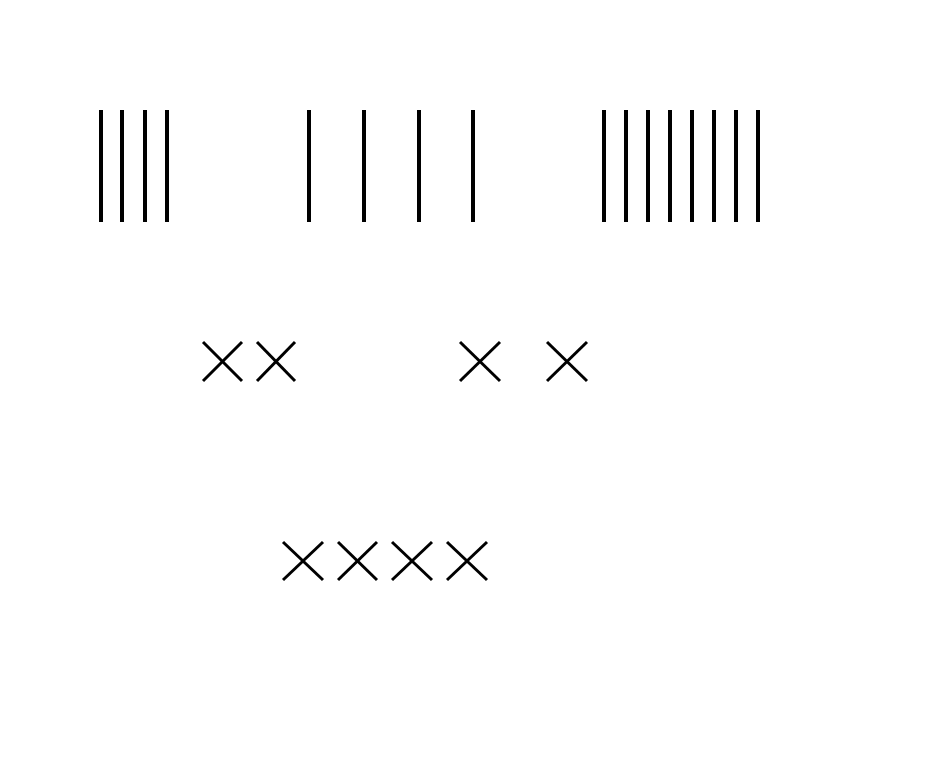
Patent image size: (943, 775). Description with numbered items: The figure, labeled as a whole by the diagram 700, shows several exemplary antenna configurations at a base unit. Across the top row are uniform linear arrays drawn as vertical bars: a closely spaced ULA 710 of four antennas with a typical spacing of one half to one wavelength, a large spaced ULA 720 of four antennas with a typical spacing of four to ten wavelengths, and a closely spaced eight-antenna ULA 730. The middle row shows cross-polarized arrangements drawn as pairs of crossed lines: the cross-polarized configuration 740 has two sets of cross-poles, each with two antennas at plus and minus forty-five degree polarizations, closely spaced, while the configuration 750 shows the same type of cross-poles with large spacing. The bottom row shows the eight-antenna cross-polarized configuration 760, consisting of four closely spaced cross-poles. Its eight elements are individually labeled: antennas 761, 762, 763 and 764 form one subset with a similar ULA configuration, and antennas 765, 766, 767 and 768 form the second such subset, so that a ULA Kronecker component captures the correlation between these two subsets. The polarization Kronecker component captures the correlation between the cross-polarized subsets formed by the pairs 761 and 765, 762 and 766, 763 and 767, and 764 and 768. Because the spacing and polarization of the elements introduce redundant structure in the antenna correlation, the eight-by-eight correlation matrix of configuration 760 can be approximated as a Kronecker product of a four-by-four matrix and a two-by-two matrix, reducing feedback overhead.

The antenna configurations diagram 700 is at (443, 406).
The closely spaced ULA 710 is at (142, 170).
The large spaced ULA 720 is at (383, 175).
The 8 antenna ULA closely spaced 730 is at (714, 181).
The cross-polarized configuration 740 is at (189, 401).
The 4 antenna XPOL large spacing 750 is at (630, 406).
The eight-antenna cross-polarized configuration 760 is at (429, 559).
The antenna 761 is at (284, 550).
The antenna 762 is at (340, 536).
The antenna 763 is at (401, 540).
The antenna 764 is at (459, 540).
The antenna 765 is at (295, 582).
The antenna 766 is at (348, 576).
The antenna 767 is at (403, 579).
The antenna 768 is at (462, 579).